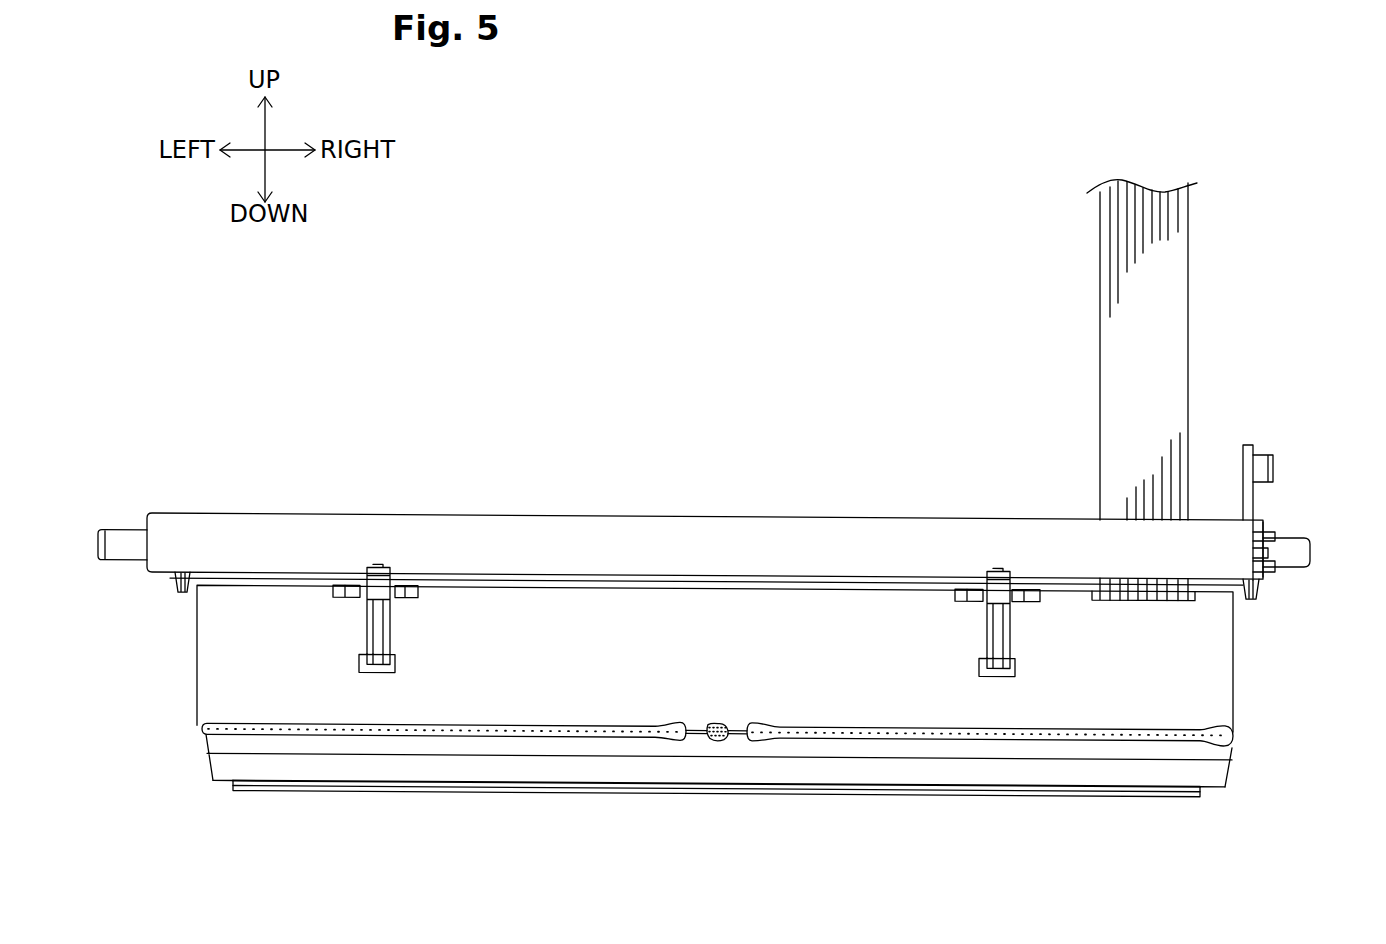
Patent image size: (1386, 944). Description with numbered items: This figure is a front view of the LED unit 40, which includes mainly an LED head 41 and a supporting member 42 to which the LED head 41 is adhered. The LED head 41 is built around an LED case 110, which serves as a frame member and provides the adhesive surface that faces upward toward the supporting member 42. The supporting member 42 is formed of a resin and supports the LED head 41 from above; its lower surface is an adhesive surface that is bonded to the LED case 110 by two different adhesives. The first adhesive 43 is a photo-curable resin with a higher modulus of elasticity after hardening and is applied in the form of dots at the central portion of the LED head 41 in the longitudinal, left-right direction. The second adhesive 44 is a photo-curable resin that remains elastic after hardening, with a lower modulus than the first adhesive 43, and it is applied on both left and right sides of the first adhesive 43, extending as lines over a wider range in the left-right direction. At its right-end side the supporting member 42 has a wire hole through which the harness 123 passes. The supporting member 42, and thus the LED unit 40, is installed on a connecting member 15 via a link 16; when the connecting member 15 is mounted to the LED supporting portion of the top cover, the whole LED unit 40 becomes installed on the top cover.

The connecting member 15 is at (1306, 530).
The link 16 is at (377, 563).
The LED unit 40 is at (783, 686).
The LED head 41 is at (766, 739).
The supporting member 42 is at (1248, 631).
The first adhesive 43 is at (720, 738).
The second adhesive 44 is at (520, 736).
The LED case 110 is at (204, 761).
The harness 123 is at (1188, 306).